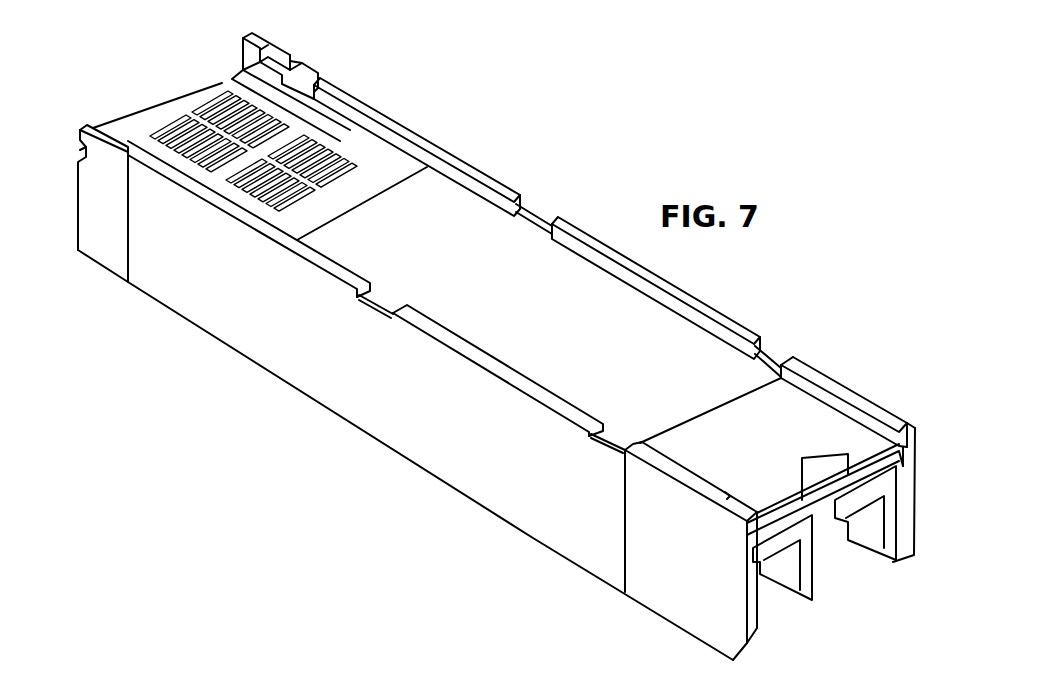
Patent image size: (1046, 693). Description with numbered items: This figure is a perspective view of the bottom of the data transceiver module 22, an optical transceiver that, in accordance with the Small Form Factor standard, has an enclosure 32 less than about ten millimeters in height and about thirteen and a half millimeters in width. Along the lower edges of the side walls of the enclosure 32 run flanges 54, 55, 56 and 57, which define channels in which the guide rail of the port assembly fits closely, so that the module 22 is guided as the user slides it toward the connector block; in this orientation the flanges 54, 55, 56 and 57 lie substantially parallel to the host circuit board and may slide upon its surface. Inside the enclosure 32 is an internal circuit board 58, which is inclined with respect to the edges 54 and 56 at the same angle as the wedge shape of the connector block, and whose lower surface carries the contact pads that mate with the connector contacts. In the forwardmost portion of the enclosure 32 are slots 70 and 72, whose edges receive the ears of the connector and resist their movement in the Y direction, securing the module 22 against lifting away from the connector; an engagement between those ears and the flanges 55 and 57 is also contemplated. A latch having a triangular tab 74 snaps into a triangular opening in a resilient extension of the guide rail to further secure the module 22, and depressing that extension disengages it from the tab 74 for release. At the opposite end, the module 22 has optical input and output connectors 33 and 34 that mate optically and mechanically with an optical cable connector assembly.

The data transceiver module 22 is at (236, 365).
The enclosure 32 is at (320, 393).
The optical input and output connector 33 is at (850, 552).
The optical input and output connector 34 is at (773, 593).
The flange 54 is at (838, 382).
The flange 55 is at (287, 54).
The flange 56 is at (680, 473).
The flange 57 is at (128, 141).
The internal circuit board 58 is at (375, 170).
The slot 70 is at (243, 60).
The slot 72 is at (78, 148).
The triangular tab 74 is at (805, 465).